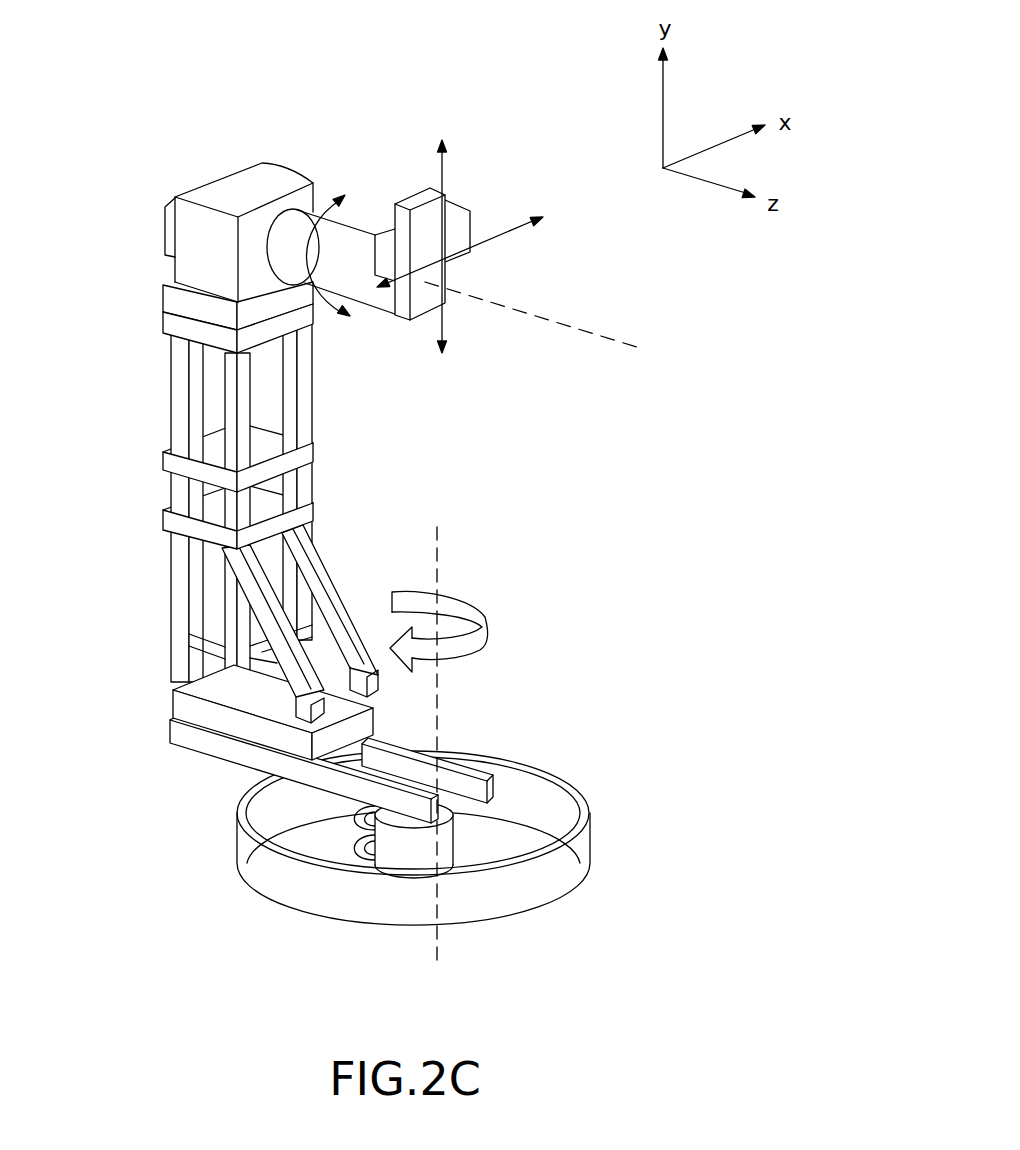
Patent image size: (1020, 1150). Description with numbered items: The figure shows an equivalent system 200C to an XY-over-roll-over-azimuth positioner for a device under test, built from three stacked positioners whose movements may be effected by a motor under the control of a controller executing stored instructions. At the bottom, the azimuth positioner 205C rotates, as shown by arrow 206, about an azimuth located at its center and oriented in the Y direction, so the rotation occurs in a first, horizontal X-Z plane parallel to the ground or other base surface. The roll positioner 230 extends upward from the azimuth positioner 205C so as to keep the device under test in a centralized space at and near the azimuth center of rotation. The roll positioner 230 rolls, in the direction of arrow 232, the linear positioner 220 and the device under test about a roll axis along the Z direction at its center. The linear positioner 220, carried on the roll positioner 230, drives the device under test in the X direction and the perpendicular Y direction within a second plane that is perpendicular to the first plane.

The equivalent system 200C is at (80, 141).
The roll positioner 230 is at (330, 250).
The arrow 232 is at (326, 250).
The linear positioner 220 is at (440, 185).
The arrow 206 is at (480, 604).
The azimuth positioner 205C is at (564, 779).